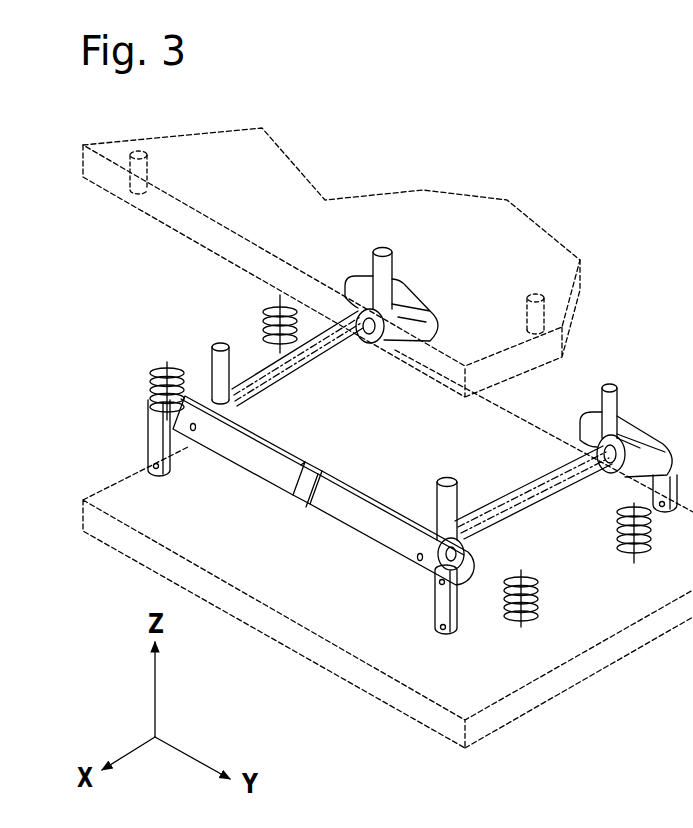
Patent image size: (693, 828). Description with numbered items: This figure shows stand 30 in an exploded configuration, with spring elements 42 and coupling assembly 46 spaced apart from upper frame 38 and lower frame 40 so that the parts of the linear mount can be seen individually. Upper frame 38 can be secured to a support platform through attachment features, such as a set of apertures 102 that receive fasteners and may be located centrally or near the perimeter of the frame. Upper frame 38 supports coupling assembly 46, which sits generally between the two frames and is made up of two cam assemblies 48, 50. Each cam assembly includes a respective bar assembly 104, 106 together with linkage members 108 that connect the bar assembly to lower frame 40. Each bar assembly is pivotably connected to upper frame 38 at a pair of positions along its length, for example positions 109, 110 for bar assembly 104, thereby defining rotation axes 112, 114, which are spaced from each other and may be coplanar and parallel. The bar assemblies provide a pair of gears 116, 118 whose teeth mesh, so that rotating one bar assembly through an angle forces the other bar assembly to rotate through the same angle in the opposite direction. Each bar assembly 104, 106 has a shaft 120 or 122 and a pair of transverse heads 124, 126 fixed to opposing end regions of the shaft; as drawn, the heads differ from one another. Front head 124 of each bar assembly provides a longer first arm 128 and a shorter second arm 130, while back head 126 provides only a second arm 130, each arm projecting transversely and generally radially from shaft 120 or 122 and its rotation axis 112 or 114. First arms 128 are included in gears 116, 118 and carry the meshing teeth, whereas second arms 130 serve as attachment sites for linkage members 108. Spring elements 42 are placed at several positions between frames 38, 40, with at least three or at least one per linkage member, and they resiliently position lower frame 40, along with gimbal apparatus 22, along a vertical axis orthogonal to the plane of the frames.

The gimbal apparatus 22 is at (682, 216).
The stand 30 is at (533, 160).
The upper frame 38 is at (230, 188).
The lower frame 40 is at (286, 579).
The spring elements 42 is at (614, 560).
The coupling assembly 46 is at (161, 498).
The cam assembly 48 is at (130, 441).
The cam assembly 50 is at (474, 652).
The apertures 102 is at (134, 150).
The bar assembly 104 is at (297, 404).
The bar assembly 106 is at (516, 486).
The linkage members 108 is at (338, 308).
The pivot position 109 is at (208, 392).
The pivot position 110 is at (418, 311).
The rotation axis 112 is at (340, 366).
The rotation axis 114 is at (578, 462).
The gear 116 is at (292, 444).
The gear 118 is at (350, 481).
The shaft 120 is at (305, 367).
The shaft 122 is at (530, 510).
The front head 124 is at (191, 448).
The back head 126 is at (399, 294).
The first arm 128 is at (276, 486).
The second arm 130 is at (358, 284).